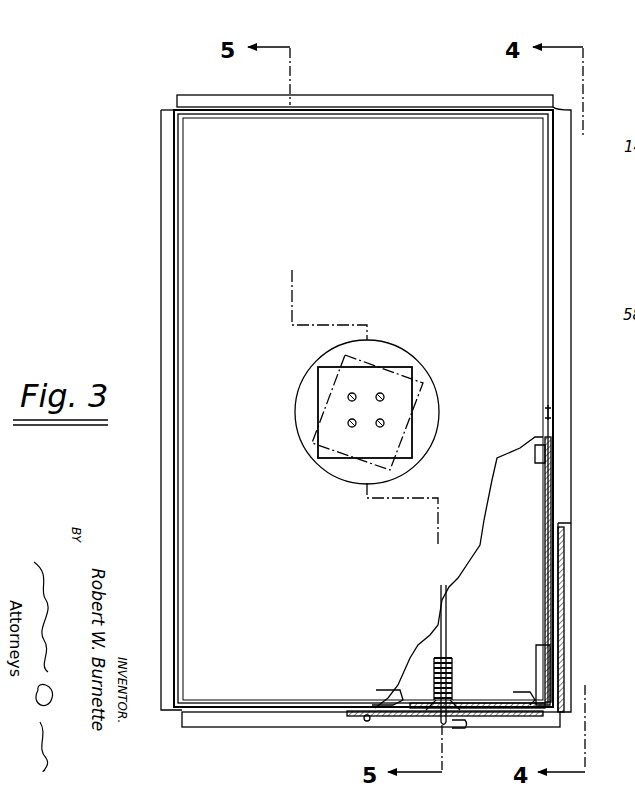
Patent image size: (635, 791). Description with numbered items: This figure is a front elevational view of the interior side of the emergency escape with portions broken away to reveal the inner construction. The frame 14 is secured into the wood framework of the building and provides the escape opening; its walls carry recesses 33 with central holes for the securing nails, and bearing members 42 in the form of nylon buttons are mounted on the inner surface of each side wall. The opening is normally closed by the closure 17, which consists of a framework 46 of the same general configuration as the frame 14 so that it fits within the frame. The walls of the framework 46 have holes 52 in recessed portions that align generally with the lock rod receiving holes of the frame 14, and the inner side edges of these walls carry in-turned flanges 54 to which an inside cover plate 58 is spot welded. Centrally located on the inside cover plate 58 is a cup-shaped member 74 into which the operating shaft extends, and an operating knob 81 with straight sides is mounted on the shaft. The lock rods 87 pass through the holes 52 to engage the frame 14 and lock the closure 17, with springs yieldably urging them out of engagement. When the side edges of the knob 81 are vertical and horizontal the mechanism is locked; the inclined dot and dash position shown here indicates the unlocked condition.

The frame 14 is at (168, 174).
The closure 17 is at (196, 247).
The inside cover plate 58 is at (181, 588).
The cup-shaped member 74 is at (300, 393).
The operating knob 81 is at (396, 364).
The bearing members 42 is at (553, 414).
The in-turned flanges 54 is at (546, 455).
The lock rods 87 is at (446, 597).
The holes 52 is at (452, 690).
The recesses 33 is at (450, 722).
The framework 46 is at (628, 257).